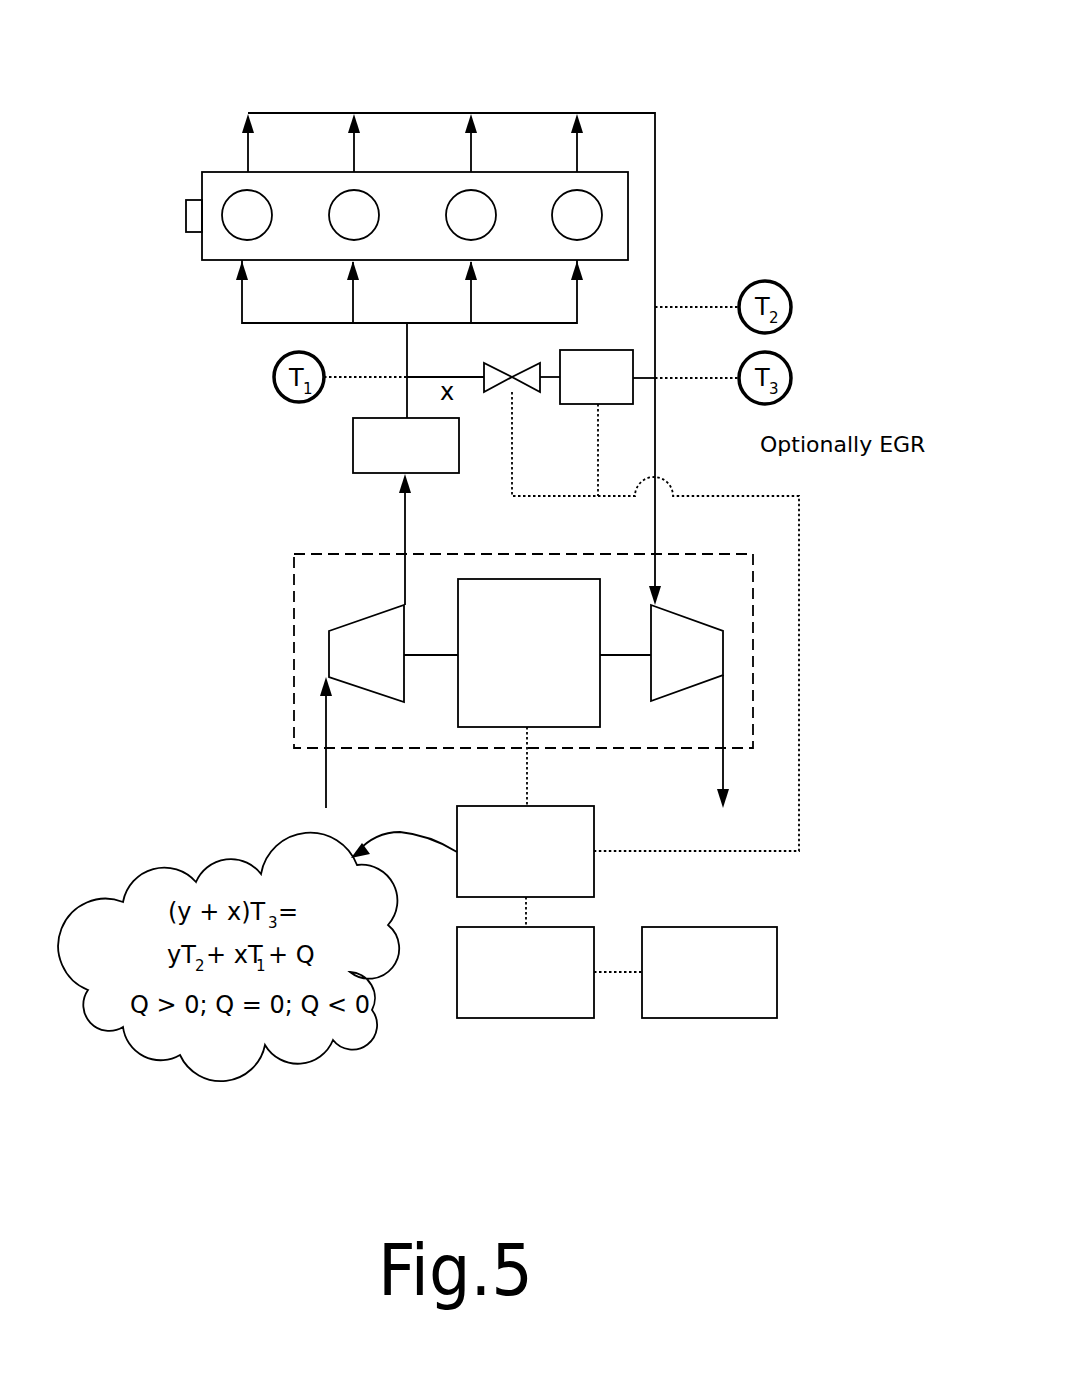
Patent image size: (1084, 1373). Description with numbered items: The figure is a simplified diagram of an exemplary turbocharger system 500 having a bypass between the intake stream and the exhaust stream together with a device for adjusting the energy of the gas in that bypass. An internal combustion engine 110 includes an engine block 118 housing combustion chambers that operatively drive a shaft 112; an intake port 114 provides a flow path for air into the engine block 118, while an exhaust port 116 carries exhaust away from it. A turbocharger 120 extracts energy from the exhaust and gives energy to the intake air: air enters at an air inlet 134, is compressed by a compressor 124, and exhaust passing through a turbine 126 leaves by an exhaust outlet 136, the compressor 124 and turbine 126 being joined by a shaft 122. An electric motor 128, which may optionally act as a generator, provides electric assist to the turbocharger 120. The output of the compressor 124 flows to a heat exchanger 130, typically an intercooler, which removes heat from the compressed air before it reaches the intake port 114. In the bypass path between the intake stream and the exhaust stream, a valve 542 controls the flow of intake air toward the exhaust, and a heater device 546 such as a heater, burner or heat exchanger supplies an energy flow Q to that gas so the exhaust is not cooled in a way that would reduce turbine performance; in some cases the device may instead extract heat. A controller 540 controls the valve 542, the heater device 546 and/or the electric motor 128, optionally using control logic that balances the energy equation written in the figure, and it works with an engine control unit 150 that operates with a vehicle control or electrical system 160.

The system 500 is at (693, 40).
The internal combustion engine 110 is at (202, 172).
The shaft 112 is at (186, 202).
The intake port 114 is at (242, 323).
The exhaust port 116 is at (423, 113).
The engine block 118 is at (437, 229).
The turbocharger 120 is at (357, 589).
The shaft 122 is at (438, 657).
The compressor 124 is at (387, 665).
The turbine 126 is at (710, 665).
The electric motor 128 is at (550, 665).
The heat exchanger 130 is at (427, 457).
The air inlet 134 is at (326, 760).
The exhaust outlet 136 is at (720, 768).
The engine control unit 150 is at (547, 984).
The vehicle control or electrical system 160 is at (731, 984).
The controller 540 is at (547, 863).
The valve 542 is at (487, 364).
The heater device 546 is at (618, 390).